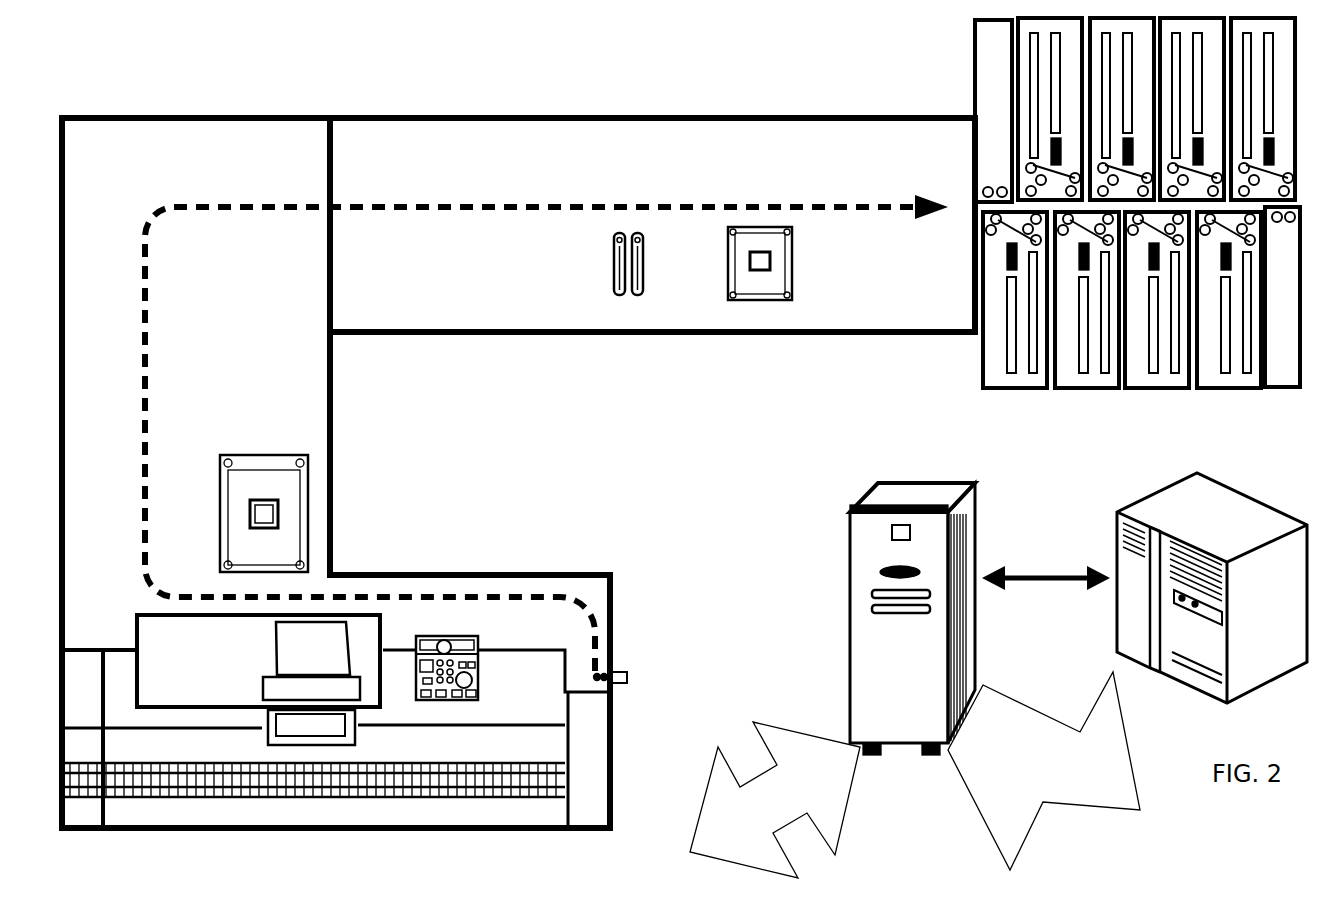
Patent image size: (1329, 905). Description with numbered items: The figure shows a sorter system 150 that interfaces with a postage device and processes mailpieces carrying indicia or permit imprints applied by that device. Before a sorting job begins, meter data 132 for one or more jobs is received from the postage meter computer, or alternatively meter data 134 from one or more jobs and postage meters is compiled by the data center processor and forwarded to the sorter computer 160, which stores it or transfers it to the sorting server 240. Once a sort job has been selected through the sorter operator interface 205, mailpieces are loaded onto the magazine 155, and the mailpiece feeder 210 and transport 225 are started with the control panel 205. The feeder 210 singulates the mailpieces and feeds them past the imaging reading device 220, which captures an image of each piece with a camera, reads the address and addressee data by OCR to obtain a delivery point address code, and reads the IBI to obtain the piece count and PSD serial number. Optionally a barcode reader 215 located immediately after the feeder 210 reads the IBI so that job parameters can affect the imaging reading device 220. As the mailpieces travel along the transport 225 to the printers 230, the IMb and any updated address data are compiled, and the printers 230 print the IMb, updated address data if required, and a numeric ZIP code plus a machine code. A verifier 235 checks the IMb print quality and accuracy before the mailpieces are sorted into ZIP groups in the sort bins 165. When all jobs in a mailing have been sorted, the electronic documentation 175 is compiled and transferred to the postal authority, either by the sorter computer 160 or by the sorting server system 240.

The sorter system 150 is at (810, 66).
The magazine 155 is at (458, 777).
The sorter computer 160 is at (848, 577).
The sort bins 165 is at (1075, 390).
The sorter operator interface 205 is at (430, 707).
The mailpiece feeder 210 is at (590, 733).
The barcode reader 215 is at (625, 672).
The imaging reading device 220 is at (295, 460).
The transport 225 is at (300, 207).
The printers 230 is at (622, 232).
The verifier 235 is at (760, 300).
The sorting server 240 is at (1127, 503).
The meter data 132 is at (775, 800).
The meter data 134 is at (775, 800).
The electronic documentation 175 is at (1044, 771).